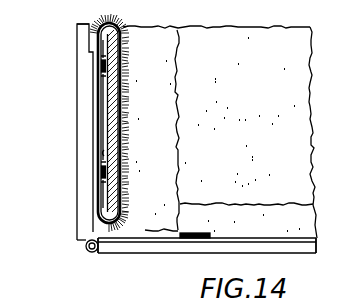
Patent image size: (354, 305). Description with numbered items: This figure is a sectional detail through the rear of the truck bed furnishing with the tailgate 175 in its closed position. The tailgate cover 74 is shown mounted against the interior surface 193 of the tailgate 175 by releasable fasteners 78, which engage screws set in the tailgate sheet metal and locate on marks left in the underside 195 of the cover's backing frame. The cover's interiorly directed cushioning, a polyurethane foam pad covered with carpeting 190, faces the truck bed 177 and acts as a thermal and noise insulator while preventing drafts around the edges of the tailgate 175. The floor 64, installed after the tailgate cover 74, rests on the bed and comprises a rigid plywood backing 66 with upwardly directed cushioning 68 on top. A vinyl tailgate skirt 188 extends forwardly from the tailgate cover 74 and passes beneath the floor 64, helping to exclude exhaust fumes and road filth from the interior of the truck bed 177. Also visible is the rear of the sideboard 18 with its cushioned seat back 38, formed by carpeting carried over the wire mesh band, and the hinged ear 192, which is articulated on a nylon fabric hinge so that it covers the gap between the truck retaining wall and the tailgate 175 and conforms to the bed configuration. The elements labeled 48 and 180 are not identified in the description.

The sideboard 18 is at (281, 26).
The cushioned seat back 38 is at (227, 50).
The panel skin 48 is at (277, 14).
The floor 64 is at (288, 205).
The rigid plywood backing 66 is at (88, 22).
The cushioning 68 is at (212, 204).
The tailgate cover 74 is at (123, 76).
The releasable fasteners 78 is at (97, 67).
The tailgate 175 is at (93, 140).
The truck bed 177 is at (178, 253).
The top seal 180 is at (118, 23).
The vinyl tailgate skirt 188 is at (139, 121).
The carpeting 190 is at (126, 122).
The ear 192 is at (149, 42).
The interior surface 193 is at (96, 195).
The underside 195 is at (104, 152).